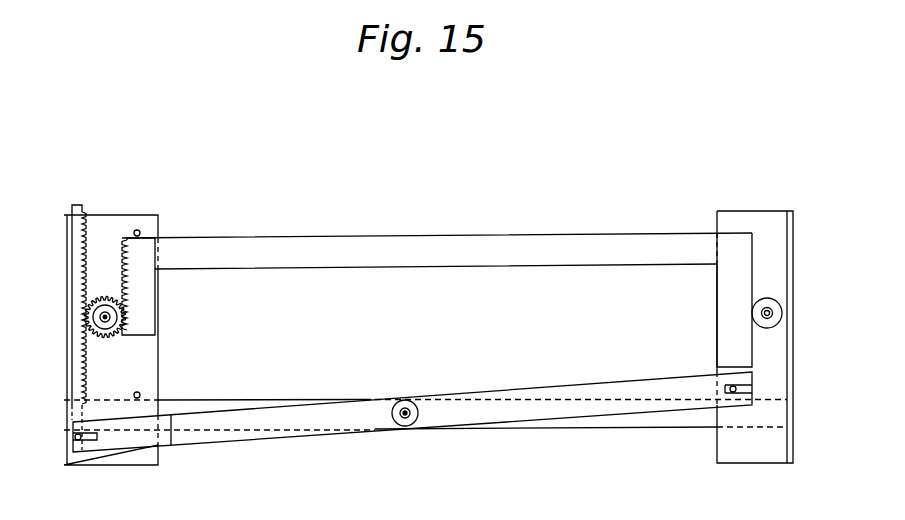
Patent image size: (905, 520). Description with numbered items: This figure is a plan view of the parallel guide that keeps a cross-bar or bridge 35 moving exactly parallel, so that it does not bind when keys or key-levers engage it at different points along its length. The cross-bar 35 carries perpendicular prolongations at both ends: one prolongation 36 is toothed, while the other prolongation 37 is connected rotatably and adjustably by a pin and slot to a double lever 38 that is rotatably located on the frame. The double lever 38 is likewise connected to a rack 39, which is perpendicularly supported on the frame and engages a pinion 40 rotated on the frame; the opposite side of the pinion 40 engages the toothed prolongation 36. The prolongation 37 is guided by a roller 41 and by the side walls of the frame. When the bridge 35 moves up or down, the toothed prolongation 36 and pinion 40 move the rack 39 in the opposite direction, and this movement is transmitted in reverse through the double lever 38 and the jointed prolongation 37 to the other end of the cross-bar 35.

The cross-bar or bridge 35 is at (315, 248).
The toothed prolongation 36 is at (147, 317).
The prolongation 37 is at (727, 303).
The double lever 38 is at (222, 436).
The rack 39 is at (82, 338).
The pinion 40 is at (102, 298).
The roller 41 is at (770, 323).